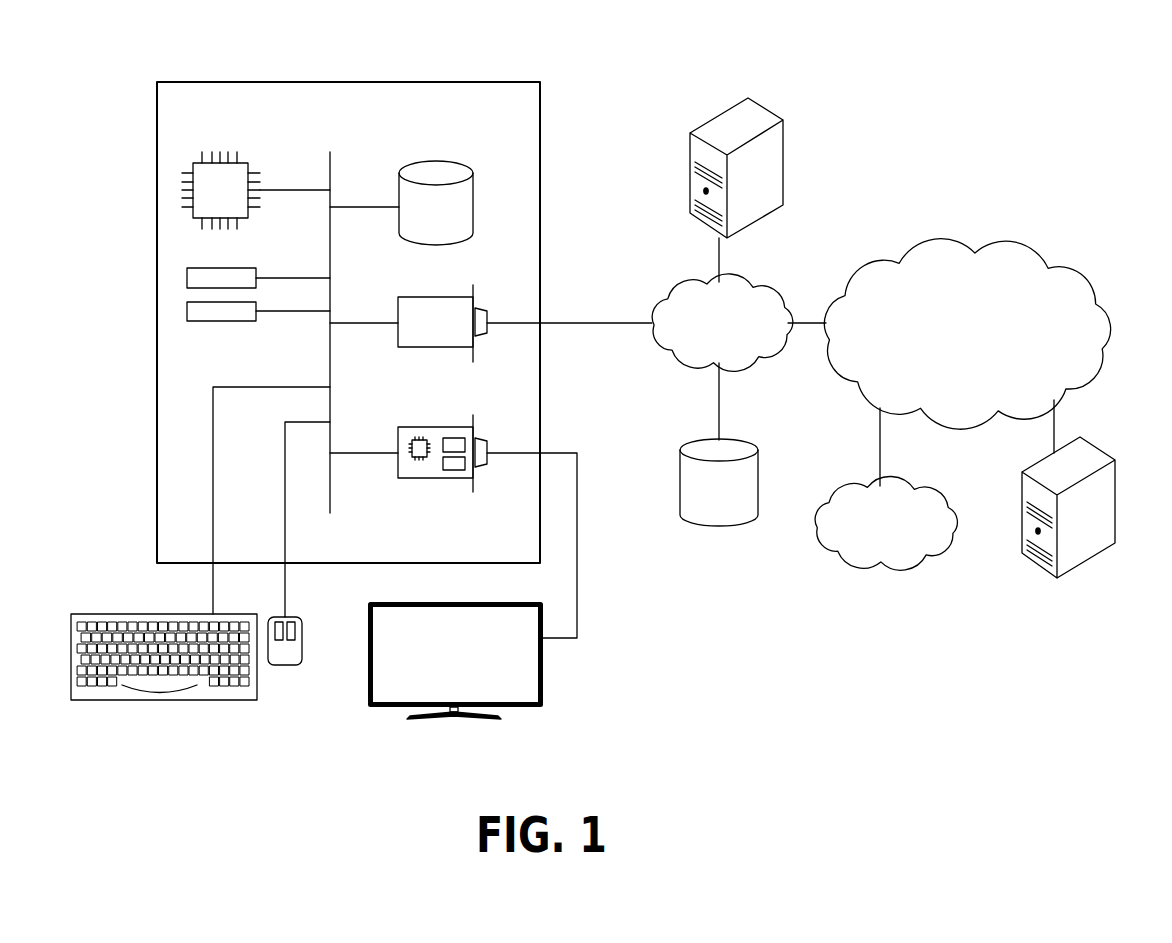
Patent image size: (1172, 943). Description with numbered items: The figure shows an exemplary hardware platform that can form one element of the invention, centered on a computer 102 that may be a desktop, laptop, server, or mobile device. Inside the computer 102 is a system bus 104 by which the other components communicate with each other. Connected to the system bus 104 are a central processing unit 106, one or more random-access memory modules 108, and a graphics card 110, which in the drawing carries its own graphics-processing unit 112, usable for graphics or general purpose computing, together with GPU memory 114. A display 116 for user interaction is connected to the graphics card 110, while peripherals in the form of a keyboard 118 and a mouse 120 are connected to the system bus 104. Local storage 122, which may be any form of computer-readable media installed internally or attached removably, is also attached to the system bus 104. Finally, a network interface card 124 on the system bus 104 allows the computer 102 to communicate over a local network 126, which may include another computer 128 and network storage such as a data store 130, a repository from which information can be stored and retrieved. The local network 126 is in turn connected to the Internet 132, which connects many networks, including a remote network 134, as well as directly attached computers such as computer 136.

The computer 102 is at (457, 82).
The system bus 104 is at (332, 160).
The central processing unit 106 is at (242, 161).
The random-access memory modules 108 is at (185, 278).
The graphics card 110 is at (408, 466).
The graphics-processing unit 112 is at (417, 461).
The GPU memory 114 is at (455, 470).
The display 116 is at (543, 680).
The keyboard 118 is at (167, 700).
The mouse 120 is at (287, 665).
The local storage 122 is at (475, 172).
The network interface card 124 is at (396, 298).
The local network 126 is at (745, 283).
The computer 128 is at (773, 113).
The data store 130 is at (747, 443).
The Internet 132 is at (1063, 258).
The remote network 134 is at (905, 483).
The computer 136 is at (1103, 450).